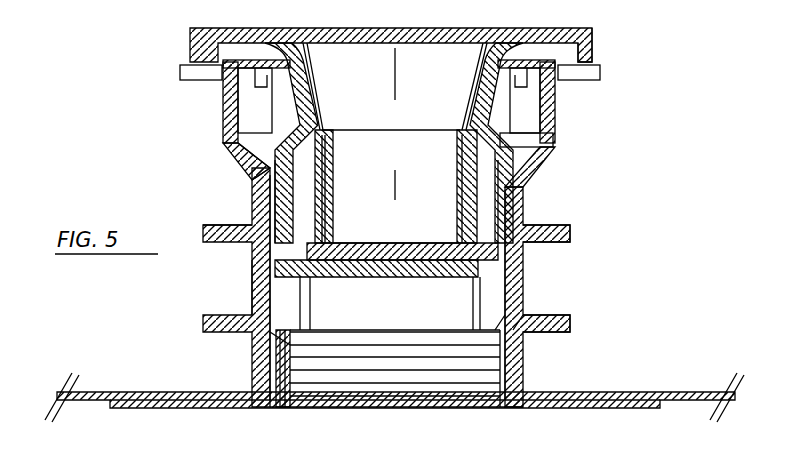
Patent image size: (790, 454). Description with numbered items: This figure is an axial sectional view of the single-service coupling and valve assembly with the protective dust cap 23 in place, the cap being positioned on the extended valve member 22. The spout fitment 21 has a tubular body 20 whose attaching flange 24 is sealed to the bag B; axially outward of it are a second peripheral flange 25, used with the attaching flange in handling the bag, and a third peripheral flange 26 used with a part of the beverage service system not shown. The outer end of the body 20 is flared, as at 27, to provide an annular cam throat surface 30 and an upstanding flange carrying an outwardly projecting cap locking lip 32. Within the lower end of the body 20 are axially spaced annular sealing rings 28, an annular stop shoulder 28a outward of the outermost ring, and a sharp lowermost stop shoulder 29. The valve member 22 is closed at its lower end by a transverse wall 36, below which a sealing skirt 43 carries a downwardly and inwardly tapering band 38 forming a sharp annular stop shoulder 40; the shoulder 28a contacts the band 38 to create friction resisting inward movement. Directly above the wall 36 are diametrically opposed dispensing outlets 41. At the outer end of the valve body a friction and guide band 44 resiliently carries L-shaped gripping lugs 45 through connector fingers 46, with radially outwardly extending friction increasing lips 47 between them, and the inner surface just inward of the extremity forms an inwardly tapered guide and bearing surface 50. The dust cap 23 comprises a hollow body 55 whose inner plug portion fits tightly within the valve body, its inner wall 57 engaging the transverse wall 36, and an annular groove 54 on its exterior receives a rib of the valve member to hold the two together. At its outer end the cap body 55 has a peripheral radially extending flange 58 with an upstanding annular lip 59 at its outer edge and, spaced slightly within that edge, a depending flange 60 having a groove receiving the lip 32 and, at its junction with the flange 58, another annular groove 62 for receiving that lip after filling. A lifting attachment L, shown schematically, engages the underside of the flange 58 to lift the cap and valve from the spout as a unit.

The tubular body 20 is at (265, 272).
The spout fitment 21 is at (538, 270).
The valve member 22 is at (263, 171).
The dust cap 23 is at (560, 100).
The attaching flange 24 is at (178, 408).
The second peripheral flange 25 is at (570, 324).
The third peripheral flange 26 is at (570, 232).
The flared outer end 27 is at (540, 160).
The annular sealing rings 28 is at (290, 362).
The annular stop shoulder 28a is at (268, 340).
The annular stop shoulder 29 is at (492, 408).
The cam throat surface 30 is at (532, 138).
The cap locking lip 32 is at (553, 141).
The transverse wall 36 is at (355, 280).
The tapering band 38 is at (505, 322).
The annular stop shoulder 40 is at (270, 292).
The dispensing outlets 41 is at (288, 205).
The sealing skirt 43 is at (478, 292).
The friction and guide band 44 is at (240, 152).
The gripping lugs 45 is at (258, 78).
The resilient connector fingers 46 is at (228, 134).
The friction increasing lips 47 is at (280, 45).
The guide and bearing surface 50 is at (450, 110).
The annular groove 54 is at (305, 228).
The hollow body 55 is at (322, 162).
The inner wall 57 is at (400, 256).
The peripheral flange 58 is at (533, 44).
The annular lip 59 is at (585, 34).
The depending flange 60 is at (240, 100).
The annular groove 62 is at (250, 60).
The bag B is at (678, 392).
The attachment L is at (600, 72).